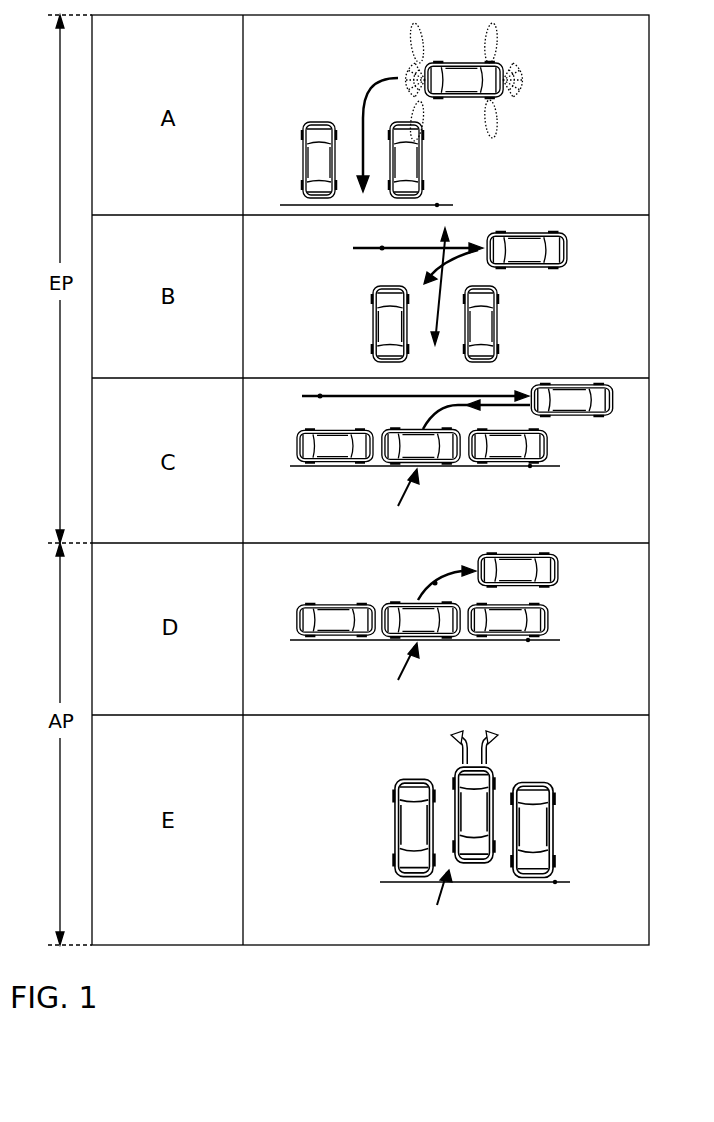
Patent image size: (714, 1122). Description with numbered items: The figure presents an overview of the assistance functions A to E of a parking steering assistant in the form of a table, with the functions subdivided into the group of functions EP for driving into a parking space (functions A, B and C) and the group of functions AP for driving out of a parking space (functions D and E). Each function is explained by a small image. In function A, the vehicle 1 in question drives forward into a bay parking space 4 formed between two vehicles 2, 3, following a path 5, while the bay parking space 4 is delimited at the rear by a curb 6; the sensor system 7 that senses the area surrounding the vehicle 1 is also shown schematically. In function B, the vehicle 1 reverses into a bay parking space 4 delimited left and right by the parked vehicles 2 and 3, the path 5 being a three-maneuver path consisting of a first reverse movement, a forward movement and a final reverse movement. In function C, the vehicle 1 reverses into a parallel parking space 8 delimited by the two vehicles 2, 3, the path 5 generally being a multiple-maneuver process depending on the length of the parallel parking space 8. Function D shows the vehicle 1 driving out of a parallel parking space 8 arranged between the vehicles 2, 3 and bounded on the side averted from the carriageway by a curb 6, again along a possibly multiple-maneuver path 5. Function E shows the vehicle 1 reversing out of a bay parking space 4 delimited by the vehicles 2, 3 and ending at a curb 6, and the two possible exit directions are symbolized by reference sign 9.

The vehicle in question 1 is at (458, 65).
The parked vehicle 2 is at (313, 131).
The parked vehicle 3 is at (411, 162).
The bay parking space 4 is at (350, 155).
The path 5 is at (377, 81).
The curb 6 is at (438, 204).
The sensor system 7 is at (522, 70).
The parallel parking space 8 is at (398, 506).
The reference sign for two exit directions 9 is at (516, 748).